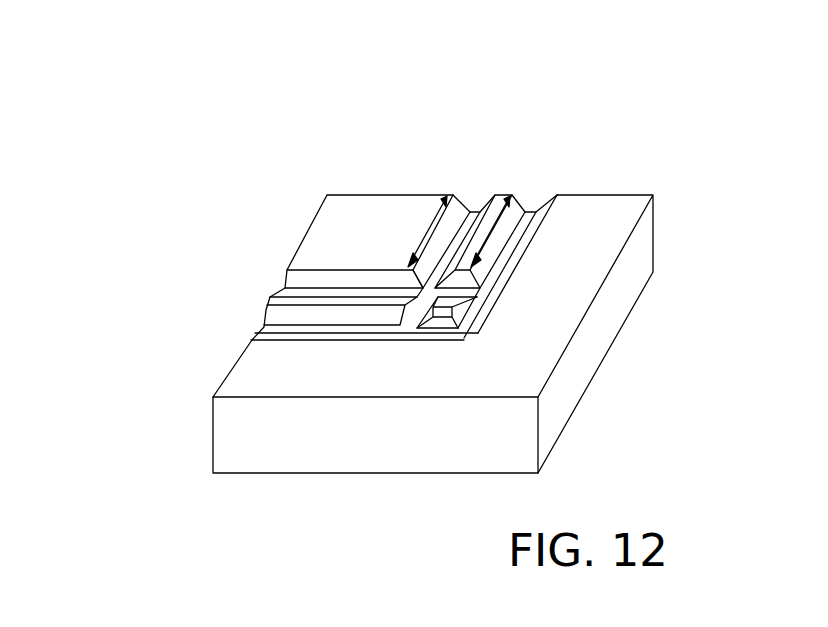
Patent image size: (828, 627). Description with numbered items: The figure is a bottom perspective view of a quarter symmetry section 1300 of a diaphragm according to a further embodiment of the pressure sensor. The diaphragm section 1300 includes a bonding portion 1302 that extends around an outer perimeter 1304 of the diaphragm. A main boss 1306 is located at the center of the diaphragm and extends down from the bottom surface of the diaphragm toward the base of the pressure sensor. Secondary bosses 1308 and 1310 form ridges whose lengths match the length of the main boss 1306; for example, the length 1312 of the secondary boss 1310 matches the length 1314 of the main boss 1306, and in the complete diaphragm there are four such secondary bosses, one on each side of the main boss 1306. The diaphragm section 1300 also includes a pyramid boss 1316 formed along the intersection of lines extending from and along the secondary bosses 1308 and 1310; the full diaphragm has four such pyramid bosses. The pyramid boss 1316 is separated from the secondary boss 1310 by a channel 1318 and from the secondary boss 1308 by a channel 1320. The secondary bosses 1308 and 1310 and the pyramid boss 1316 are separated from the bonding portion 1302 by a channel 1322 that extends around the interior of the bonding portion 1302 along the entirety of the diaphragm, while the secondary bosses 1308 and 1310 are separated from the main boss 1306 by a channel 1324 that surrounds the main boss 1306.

The quarter symmetry section 1300 is at (155, 96).
The bonding portion 1302 is at (240, 392).
The outer perimeter 1304 is at (282, 467).
The main boss 1306 is at (323, 196).
The secondary boss 1308 is at (266, 300).
The secondary boss 1310 is at (483, 240).
The length of secondary boss 1312 is at (463, 228).
The length of main boss 1314 is at (420, 264).
The pyramid boss 1316 is at (455, 320).
The channel 1318 is at (480, 293).
The channel 1320 is at (457, 226).
The channel 1322 is at (252, 335).
The channel 1324 is at (282, 268).